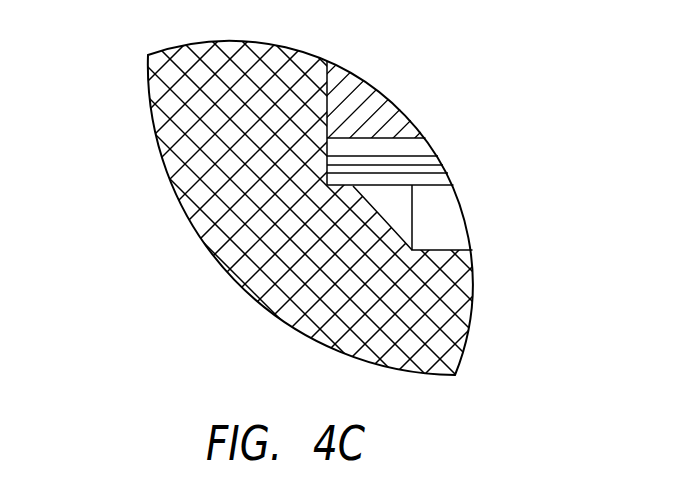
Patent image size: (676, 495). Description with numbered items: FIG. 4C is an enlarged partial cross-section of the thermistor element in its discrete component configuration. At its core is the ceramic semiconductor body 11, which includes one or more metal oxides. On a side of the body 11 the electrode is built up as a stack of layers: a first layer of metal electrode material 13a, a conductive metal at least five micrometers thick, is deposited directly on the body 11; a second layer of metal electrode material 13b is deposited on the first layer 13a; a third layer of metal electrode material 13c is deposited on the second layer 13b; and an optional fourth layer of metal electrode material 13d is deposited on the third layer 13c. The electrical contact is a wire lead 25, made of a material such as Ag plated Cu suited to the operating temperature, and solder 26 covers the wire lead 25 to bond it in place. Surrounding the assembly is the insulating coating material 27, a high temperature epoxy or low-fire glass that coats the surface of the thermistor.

The ceramic semiconductor body 11 is at (374, 81).
The first layer of metal electrode material 13a is at (437, 141).
The second layer of metal electrode material 13b is at (444, 158).
The third layer of metal electrode material 13c is at (448, 167).
The fourth layer of metal electrode material 13d is at (454, 180).
The wire lead 25 is at (458, 216).
The solder 26 is at (392, 228).
The insulating coating material 27 is at (146, 87).